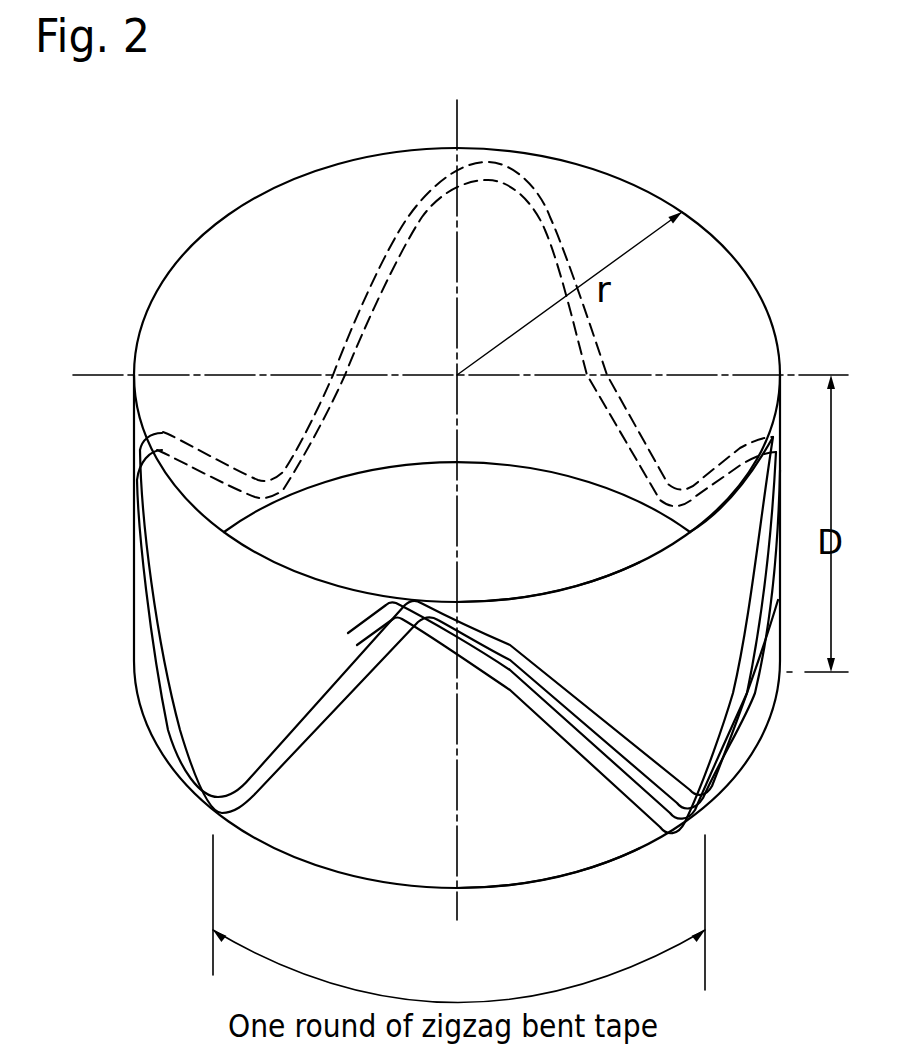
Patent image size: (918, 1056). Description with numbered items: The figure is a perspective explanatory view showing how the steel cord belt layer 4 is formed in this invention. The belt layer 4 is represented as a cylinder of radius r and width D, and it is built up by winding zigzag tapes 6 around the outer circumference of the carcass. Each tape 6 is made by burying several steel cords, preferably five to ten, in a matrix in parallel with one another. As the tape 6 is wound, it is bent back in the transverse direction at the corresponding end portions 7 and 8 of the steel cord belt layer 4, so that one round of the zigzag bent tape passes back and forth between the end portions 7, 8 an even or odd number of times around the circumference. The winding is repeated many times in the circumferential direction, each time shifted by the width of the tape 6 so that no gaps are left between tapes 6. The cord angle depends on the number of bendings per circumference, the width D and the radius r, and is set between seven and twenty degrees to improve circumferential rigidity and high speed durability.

The steel cord belt layer 4 is at (355, 158).
The zigzag tape 6 is at (727, 723).
The end portion of the steel cord belt layer 7 is at (548, 592).
The end portion of the steel cord belt layer 8 is at (560, 877).